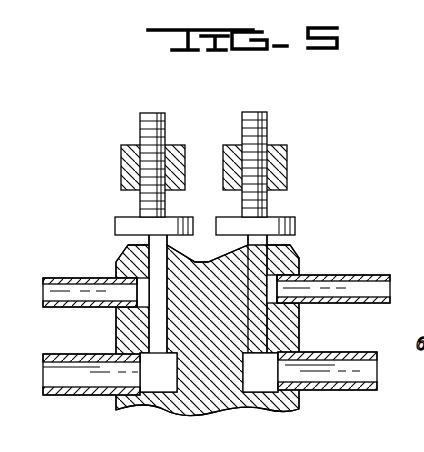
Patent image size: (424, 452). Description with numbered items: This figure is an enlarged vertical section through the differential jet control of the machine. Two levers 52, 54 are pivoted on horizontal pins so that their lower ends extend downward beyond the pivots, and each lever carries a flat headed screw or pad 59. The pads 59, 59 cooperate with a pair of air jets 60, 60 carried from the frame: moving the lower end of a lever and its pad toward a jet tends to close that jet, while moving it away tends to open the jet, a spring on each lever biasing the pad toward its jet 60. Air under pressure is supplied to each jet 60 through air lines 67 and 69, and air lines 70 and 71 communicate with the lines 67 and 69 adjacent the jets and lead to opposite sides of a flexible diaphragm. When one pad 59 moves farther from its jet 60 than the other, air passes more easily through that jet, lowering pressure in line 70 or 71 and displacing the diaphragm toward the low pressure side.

The lever 52 is at (121, 160).
The lever 54 is at (288, 168).
The flat headed screw or pad 59 is at (119, 224).
The air jet 60 is at (132, 246).
The air line 67 is at (348, 391).
The air line 69 is at (88, 395).
The air line 70 is at (361, 275).
The air line 71 is at (73, 271).